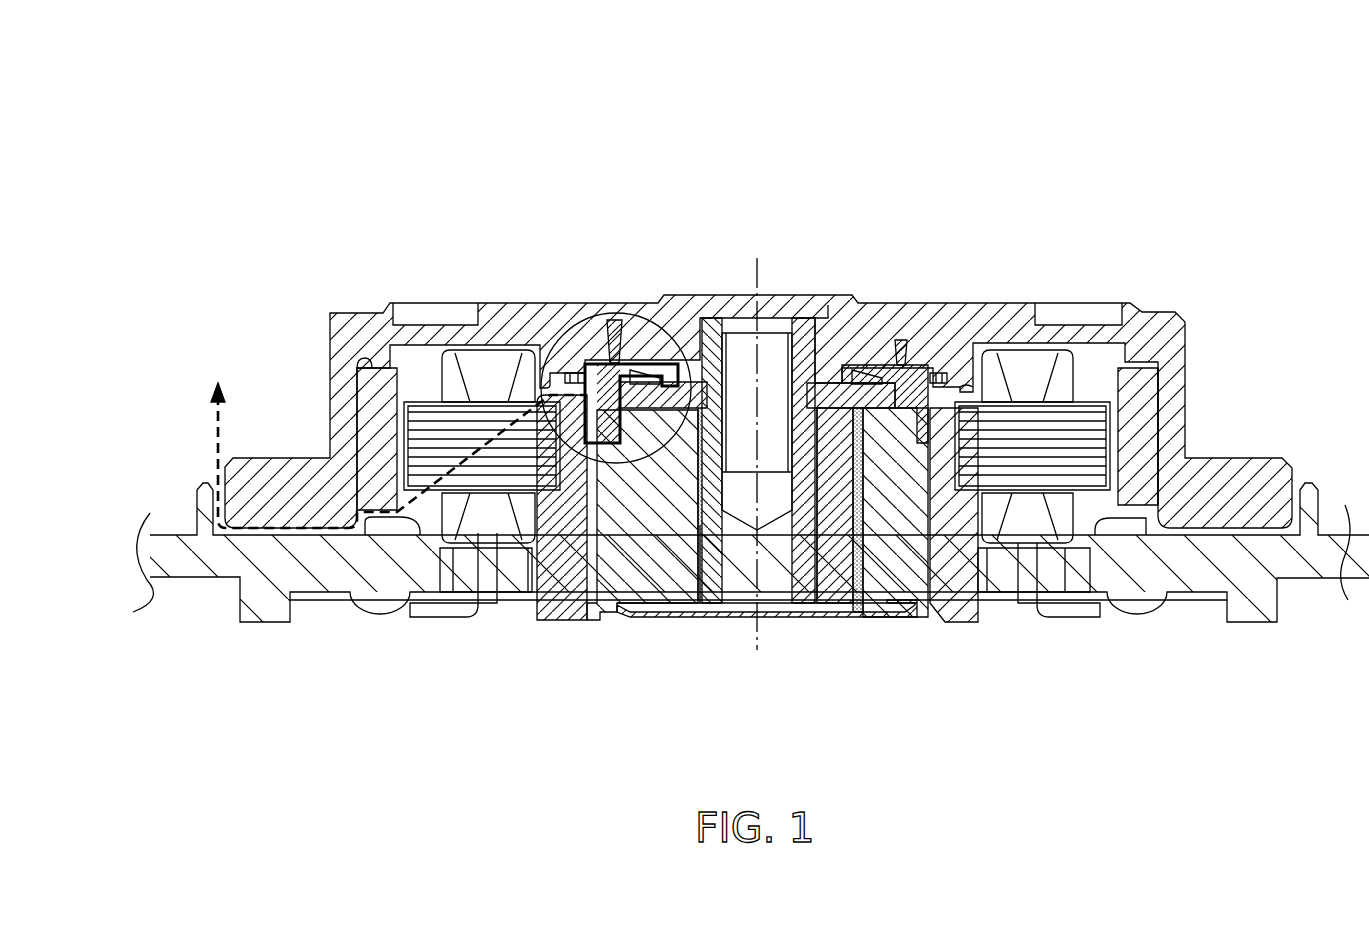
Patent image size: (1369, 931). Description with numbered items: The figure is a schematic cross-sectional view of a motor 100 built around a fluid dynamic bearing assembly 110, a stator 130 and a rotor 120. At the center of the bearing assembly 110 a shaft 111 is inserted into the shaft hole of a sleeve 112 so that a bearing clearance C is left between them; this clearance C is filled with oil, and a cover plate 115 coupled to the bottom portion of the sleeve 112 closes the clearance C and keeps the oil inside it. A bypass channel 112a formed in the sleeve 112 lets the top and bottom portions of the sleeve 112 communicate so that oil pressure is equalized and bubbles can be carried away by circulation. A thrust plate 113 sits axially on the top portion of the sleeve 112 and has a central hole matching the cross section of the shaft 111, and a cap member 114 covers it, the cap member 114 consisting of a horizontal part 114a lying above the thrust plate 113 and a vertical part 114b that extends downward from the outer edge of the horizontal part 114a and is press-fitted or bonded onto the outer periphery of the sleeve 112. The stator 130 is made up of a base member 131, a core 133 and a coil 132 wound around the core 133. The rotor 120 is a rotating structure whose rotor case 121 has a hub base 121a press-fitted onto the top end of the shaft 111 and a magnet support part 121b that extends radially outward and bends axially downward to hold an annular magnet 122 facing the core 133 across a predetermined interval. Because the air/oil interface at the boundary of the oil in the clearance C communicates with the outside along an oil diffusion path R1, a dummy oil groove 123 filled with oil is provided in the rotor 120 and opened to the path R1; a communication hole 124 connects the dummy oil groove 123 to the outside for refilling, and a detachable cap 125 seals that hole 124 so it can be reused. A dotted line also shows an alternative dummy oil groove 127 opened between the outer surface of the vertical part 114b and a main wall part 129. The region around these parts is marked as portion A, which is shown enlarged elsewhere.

The motor 100 is at (1093, 110).
The fluid dynamic bearing assembly 110 is at (904, 703).
The shaft 111 is at (727, 592).
The sleeve 112 is at (662, 592).
The bypass channel 112a is at (858, 612).
The thrust plate 113 is at (822, 336).
The cap member 114 is at (707, 177).
The horizontal part 114a is at (668, 366).
The vertical part 114b is at (565, 364).
The cover plate 115 is at (783, 612).
The rotor 120 is at (1190, 292).
The rotor case 121 is at (1075, 318).
The hub base 121a is at (838, 345).
The magnet support part 121b is at (1173, 423).
The magnet 122 is at (1147, 390).
The dummy oil groove 123 is at (920, 385).
The communication hole 124 is at (612, 330).
The cap 125 is at (628, 372).
The dummy oil groove 127 is at (566, 376).
The main wall part 129 is at (965, 392).
The stator 130 is at (575, 697).
The base member 131 is at (560, 595).
The coil 132 is at (482, 612).
The core 133 is at (425, 527).
The portion A is at (545, 372).
The bearing clearance C is at (680, 525).
The oil diffusion path R1 is at (395, 439).